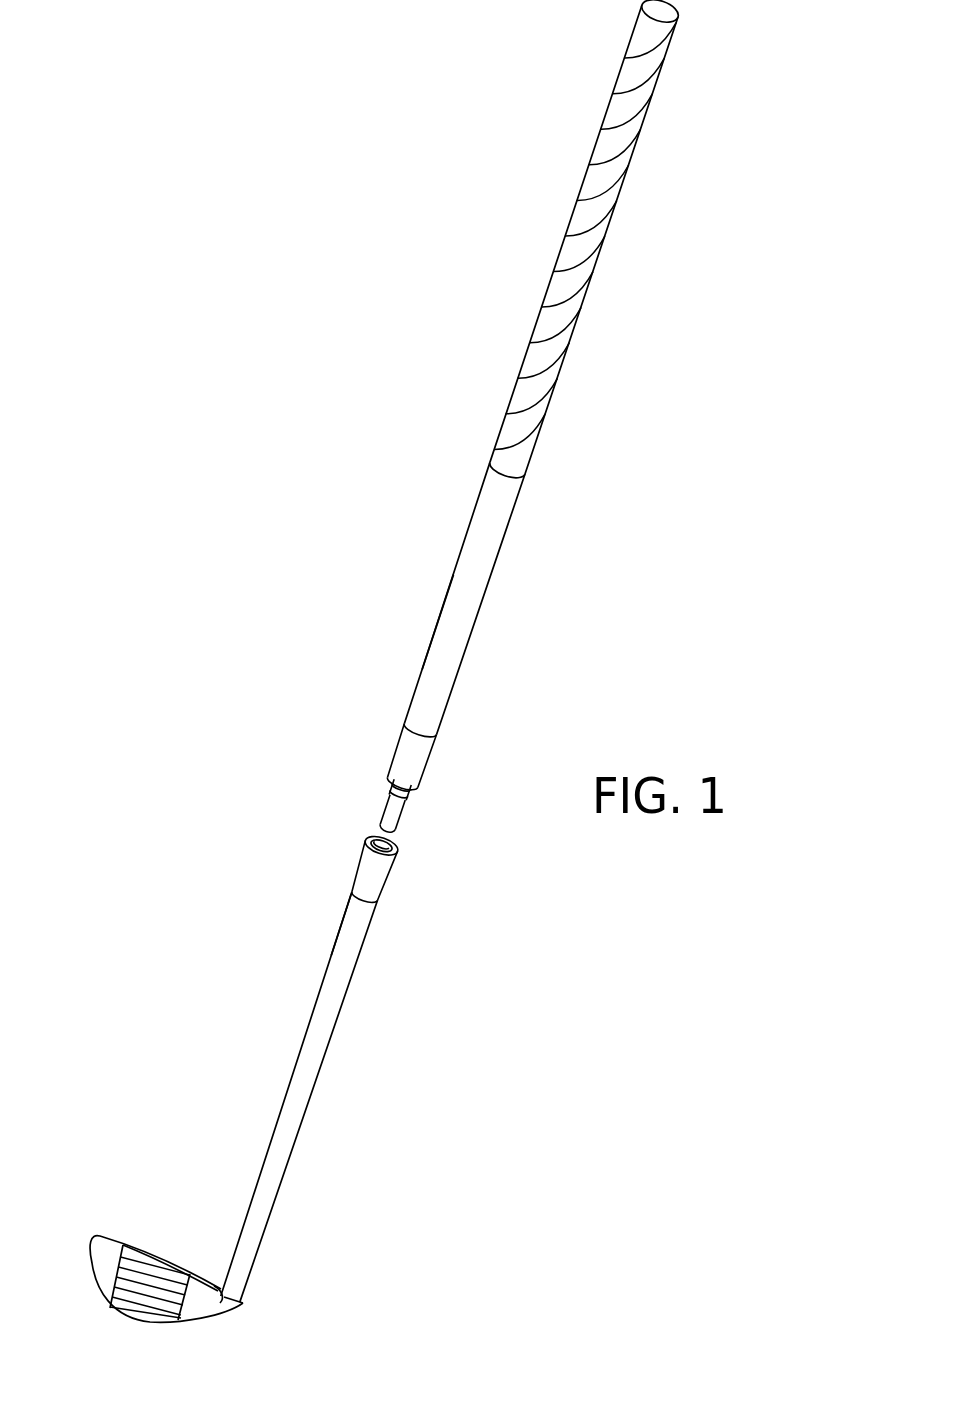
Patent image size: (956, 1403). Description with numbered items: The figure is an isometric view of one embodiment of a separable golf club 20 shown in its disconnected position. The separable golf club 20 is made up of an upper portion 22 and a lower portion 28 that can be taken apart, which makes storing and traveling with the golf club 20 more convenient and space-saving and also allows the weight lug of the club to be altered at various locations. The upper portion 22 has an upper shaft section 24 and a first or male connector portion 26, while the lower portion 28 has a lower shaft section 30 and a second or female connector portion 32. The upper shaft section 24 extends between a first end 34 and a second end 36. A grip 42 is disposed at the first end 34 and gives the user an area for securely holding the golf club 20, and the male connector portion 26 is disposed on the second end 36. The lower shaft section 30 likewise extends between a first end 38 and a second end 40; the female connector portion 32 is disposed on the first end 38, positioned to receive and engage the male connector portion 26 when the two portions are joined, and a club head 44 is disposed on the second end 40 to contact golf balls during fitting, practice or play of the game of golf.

The separable golf club 20 is at (219, 127).
The upper portion 22 is at (719, 359).
The upper shaft section 24 is at (492, 572).
The male connector portion 26 is at (432, 760).
The lower portion 28 is at (437, 1119).
The lower shaft section 30 is at (327, 1037).
The female connector portion 32 is at (377, 873).
The first end of upper shaft section 34 is at (607, 207).
The second end of upper shaft section 36 is at (432, 645).
The first end of lower shaft section 38 is at (340, 925).
The second end of lower shaft section 40 is at (255, 1275).
The grip 42 is at (537, 289).
The club head 44 is at (132, 1227).